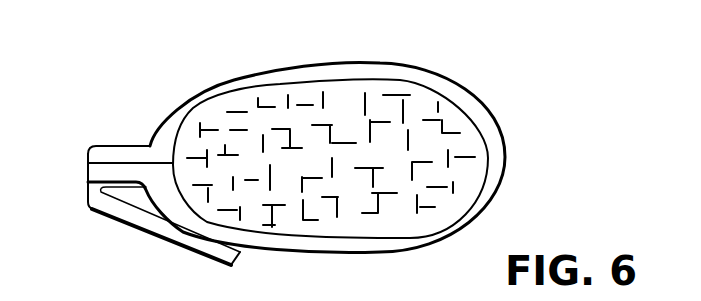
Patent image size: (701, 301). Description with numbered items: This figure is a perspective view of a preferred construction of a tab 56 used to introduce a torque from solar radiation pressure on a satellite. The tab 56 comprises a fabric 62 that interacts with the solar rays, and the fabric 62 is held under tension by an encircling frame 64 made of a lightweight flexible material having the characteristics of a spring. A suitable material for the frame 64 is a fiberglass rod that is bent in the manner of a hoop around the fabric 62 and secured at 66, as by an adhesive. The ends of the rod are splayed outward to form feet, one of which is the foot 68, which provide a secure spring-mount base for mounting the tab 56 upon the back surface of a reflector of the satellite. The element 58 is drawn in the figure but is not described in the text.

The tab 56 is at (500, 102).
The clip 58 is at (87, 199).
The fabric 62 is at (352, 105).
The frame 64 is at (441, 241).
The securing point 66 is at (120, 147).
The foot 68 is at (158, 236).